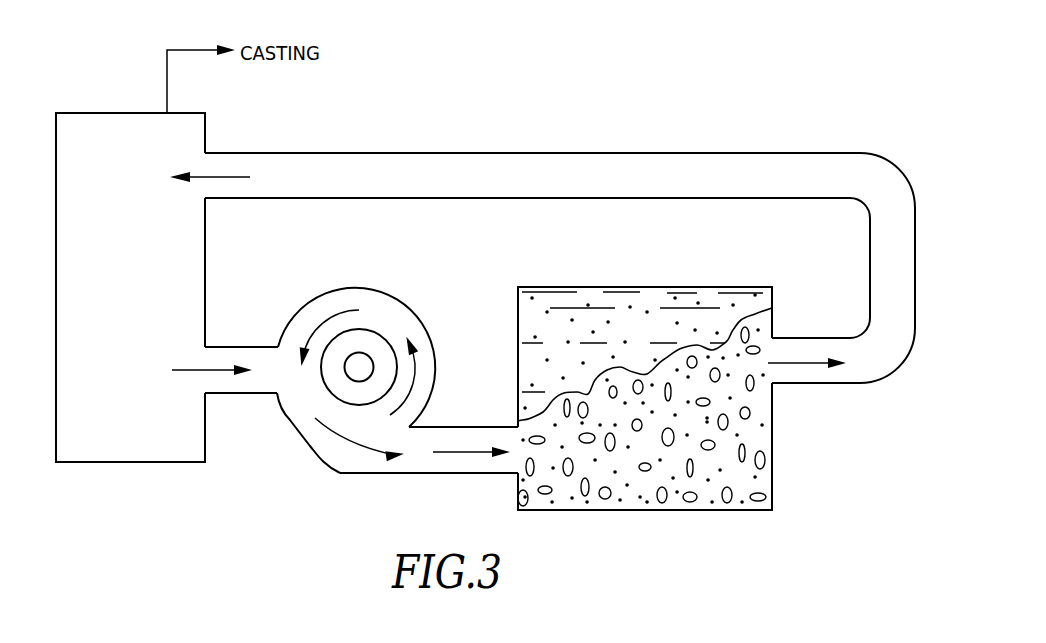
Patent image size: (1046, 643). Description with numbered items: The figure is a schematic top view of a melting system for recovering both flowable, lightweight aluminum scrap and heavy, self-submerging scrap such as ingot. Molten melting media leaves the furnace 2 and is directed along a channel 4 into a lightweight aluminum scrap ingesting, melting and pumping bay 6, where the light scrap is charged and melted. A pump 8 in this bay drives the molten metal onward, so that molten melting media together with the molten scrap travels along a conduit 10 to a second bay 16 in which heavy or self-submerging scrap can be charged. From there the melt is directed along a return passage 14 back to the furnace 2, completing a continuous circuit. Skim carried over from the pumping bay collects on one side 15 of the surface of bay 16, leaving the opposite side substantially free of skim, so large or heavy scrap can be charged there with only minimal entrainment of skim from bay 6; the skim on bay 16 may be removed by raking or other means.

The casting furnace / melt supply vessel 2 is at (128, 463).
The inlet conduit to pump 4 is at (242, 395).
The pump housing 6 is at (332, 470).
The pump impeller 8 is at (370, 340).
The pump outlet conduit 10 is at (412, 473).
The return conduit 14 is at (562, 152).
The liquid metal in filter tank 15 is at (560, 300).
The filter media / solid particles 16 is at (637, 490).